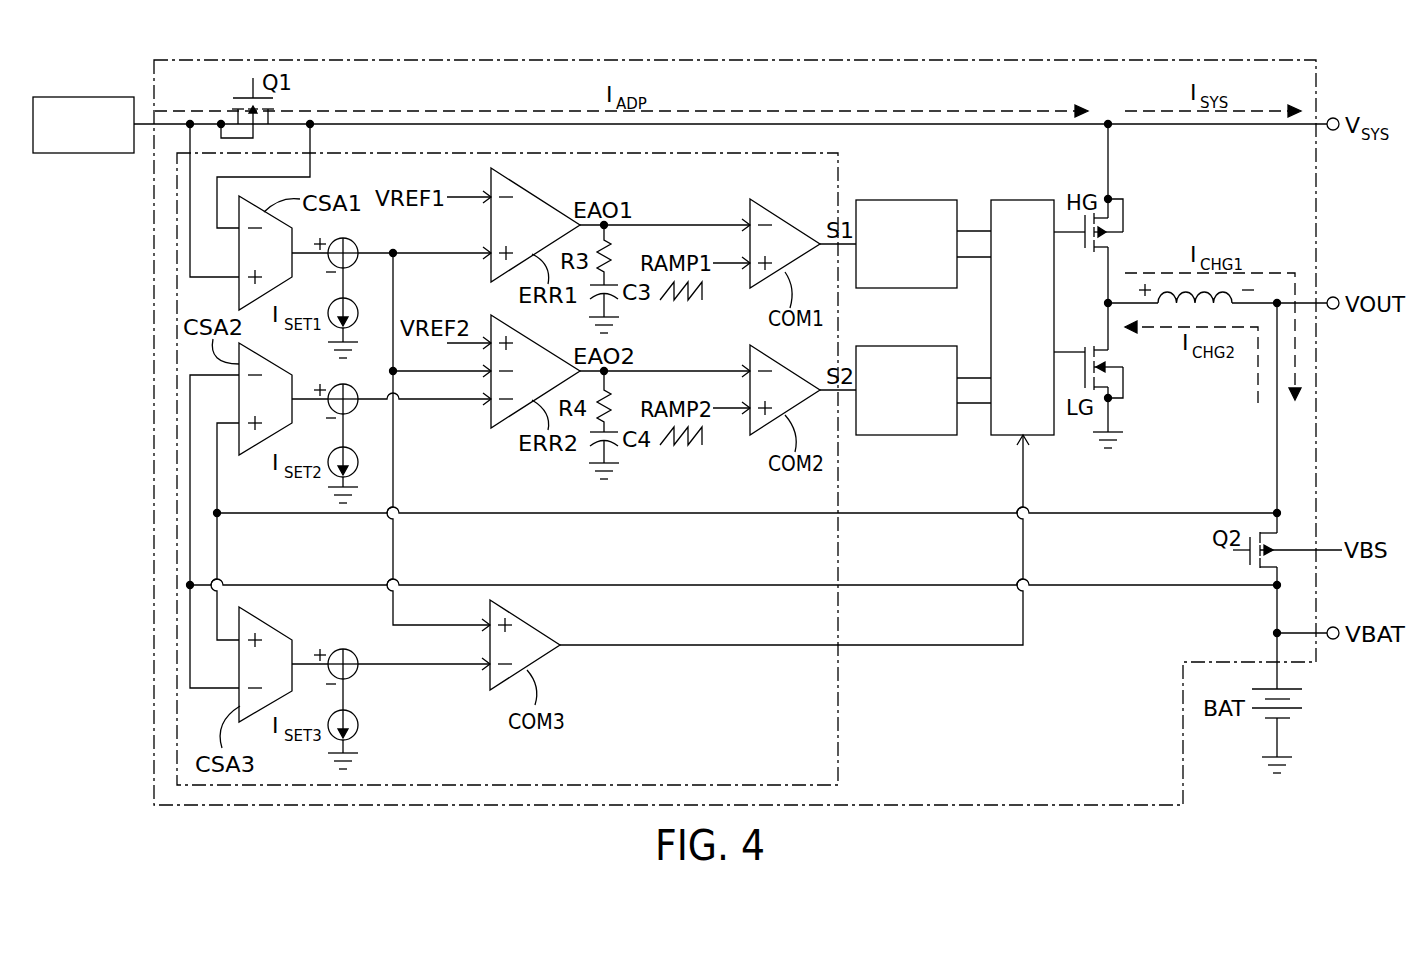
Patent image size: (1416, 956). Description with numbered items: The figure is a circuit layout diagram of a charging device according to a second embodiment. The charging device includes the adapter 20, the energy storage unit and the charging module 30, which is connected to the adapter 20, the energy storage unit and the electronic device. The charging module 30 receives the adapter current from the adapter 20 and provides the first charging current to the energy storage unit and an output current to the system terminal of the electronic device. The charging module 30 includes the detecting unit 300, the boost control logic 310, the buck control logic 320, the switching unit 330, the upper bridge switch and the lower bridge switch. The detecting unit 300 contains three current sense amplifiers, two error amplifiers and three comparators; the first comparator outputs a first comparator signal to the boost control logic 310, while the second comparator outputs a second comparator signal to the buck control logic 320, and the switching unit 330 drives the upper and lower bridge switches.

The adapter 20 is at (85, 97).
The charging module 30 is at (154, 400).
The detecting unit 300 is at (838, 703).
The boost control logic 310 is at (903, 200).
The buck control logic 320 is at (905, 435).
The switching unit 330 is at (1018, 200).